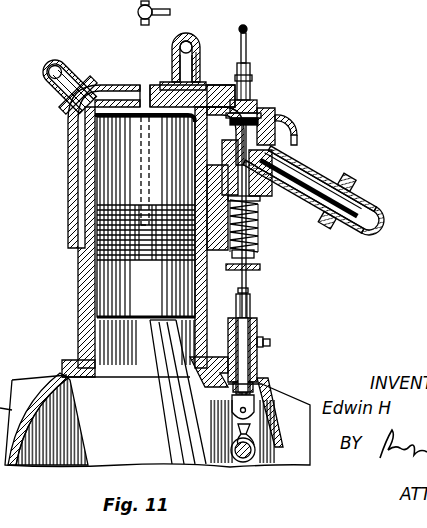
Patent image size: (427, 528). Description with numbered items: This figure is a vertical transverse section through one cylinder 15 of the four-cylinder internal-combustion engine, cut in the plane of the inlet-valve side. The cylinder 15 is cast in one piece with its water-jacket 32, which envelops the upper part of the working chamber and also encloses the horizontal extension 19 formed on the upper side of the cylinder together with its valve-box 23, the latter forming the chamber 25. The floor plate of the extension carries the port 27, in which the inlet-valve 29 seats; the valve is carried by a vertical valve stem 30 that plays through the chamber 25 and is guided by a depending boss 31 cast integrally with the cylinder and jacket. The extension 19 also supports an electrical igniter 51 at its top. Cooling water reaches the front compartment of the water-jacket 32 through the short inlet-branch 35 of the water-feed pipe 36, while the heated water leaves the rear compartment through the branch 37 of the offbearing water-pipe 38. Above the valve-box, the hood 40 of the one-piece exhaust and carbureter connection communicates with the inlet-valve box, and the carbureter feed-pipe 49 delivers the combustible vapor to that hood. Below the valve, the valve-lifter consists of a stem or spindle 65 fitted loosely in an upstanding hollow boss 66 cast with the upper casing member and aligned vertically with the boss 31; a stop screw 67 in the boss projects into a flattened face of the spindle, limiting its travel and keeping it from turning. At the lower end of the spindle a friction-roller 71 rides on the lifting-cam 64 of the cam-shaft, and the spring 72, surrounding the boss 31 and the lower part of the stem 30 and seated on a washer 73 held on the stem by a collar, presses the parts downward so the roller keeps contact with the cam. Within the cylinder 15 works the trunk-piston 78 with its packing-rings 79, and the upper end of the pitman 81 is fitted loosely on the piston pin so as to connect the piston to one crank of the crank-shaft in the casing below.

The cylinder 15 is at (88, 300).
The horizontal extension 19 is at (215, 100).
The valve-box 23 is at (239, 178).
The chamber 25 is at (262, 147).
The port 27 is at (274, 114).
The inlet-valve 29 is at (252, 104).
The valve stem 30 is at (257, 205).
The depending boss 31 is at (259, 226).
The water-jacket 32 is at (70, 190).
The inlet-branch 35 is at (200, 70).
The water-feed pipe 36 is at (190, 36).
The branch 37 is at (54, 92).
The offbearing water-pipe 38 is at (60, 60).
The hood 40 is at (300, 178).
The carbureter feed-pipe 49 is at (380, 218).
The electrical igniter 51 is at (251, 60).
The lifting-cam 64 is at (252, 431).
The stem or spindle 65 is at (251, 306).
The hollow boss 66 is at (258, 332).
The stop screw 67 is at (270, 343).
The friction-roller 71 is at (270, 399).
The spring 72 is at (255, 253).
The washer 73 is at (260, 267).
The trunk-piston 78 is at (100, 271).
The packing-ring 79 is at (152, 220).
The pitman 81 is at (165, 422).